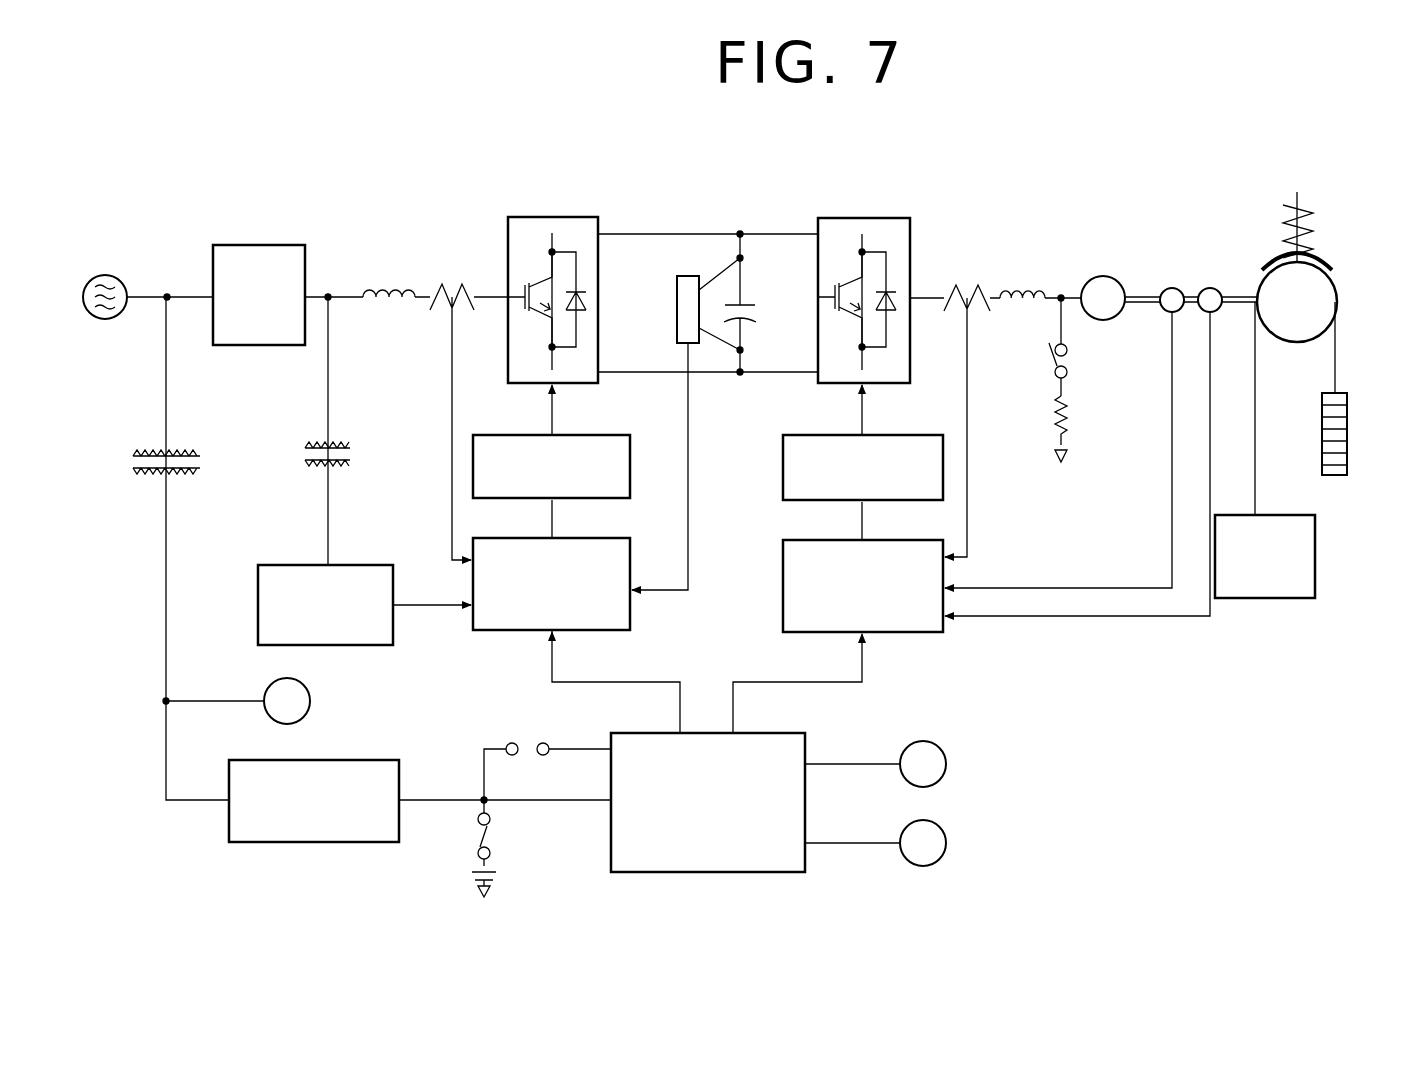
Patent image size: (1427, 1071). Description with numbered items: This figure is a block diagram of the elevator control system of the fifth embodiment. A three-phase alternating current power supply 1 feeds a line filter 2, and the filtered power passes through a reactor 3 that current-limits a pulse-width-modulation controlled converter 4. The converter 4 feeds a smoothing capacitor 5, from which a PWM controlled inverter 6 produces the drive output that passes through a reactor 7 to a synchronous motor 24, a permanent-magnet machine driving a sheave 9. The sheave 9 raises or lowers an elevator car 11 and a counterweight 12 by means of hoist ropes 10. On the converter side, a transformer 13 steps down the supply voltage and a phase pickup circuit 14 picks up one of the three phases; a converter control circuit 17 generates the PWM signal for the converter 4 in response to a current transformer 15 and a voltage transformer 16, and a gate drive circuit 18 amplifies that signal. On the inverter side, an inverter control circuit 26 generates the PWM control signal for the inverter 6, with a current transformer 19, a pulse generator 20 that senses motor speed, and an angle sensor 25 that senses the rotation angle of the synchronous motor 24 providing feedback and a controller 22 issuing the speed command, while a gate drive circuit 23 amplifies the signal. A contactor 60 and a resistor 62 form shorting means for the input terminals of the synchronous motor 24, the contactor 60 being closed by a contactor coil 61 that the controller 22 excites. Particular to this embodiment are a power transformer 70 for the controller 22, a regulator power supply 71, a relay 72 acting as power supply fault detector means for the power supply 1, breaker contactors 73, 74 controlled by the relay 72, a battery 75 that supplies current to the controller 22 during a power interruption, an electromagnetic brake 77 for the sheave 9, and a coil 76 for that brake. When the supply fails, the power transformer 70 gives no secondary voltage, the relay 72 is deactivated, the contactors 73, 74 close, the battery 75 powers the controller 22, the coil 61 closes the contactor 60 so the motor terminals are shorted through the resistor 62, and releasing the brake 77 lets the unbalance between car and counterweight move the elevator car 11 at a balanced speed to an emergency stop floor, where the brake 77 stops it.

The three-phase alternating current power supply 1 is at (120, 275).
The line filter 2 is at (262, 245).
The reactor 3 is at (391, 302).
The pulse-width-modulation controlled converter 4 is at (533, 217).
The smoothing capacitor 5 is at (748, 300).
The PWM controlled inverter 6 is at (843, 218).
The reactor 7 is at (1035, 290).
The sheave 9 is at (1338, 296).
The hoist ropes 10 is at (1334, 372).
The elevator car 11 is at (1315, 560).
The counterweight 12 is at (1347, 452).
The transformer 13 is at (300, 452).
The phase pickup circuit 14 is at (350, 565).
The current transformer 15 is at (457, 280).
The voltage transformer 16 is at (677, 305).
The converter control circuit 17 is at (630, 560).
The gate drive circuit 18 is at (630, 472).
The current transformer 19 is at (971, 292).
The pulse generator 20 is at (1170, 290).
The controller 22 is at (805, 746).
The gate drive circuit 23 is at (783, 478).
The synchronous motor 24 is at (1113, 282).
The angle sensor 25 is at (1218, 288).
The inverter control circuit 26 is at (783, 596).
The contactor 60 is at (1073, 356).
The contactor coil 61 is at (946, 764).
The resistor 62 is at (1073, 412).
The power transformer 70 is at (183, 445).
The regulator power supply 71 is at (229, 820).
The relay 72 is at (310, 700).
The breaker contactor 73 is at (493, 837).
The breaker contactor 74 is at (520, 758).
The battery 75 is at (495, 878).
The coil 76 is at (946, 843).
The electromagnetic brake 77 is at (1306, 222).